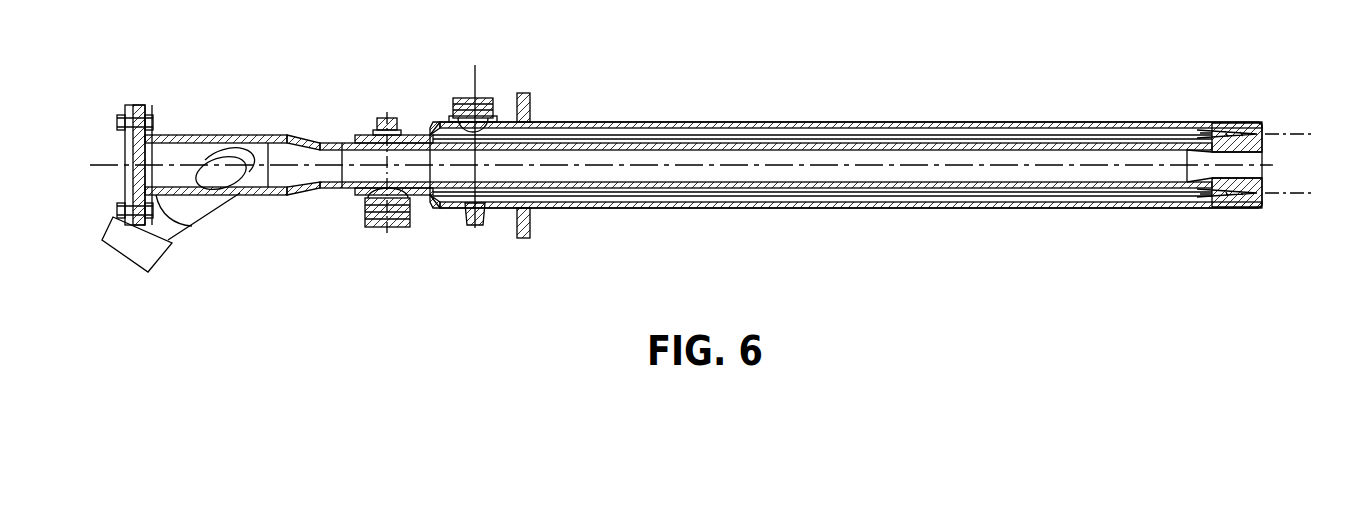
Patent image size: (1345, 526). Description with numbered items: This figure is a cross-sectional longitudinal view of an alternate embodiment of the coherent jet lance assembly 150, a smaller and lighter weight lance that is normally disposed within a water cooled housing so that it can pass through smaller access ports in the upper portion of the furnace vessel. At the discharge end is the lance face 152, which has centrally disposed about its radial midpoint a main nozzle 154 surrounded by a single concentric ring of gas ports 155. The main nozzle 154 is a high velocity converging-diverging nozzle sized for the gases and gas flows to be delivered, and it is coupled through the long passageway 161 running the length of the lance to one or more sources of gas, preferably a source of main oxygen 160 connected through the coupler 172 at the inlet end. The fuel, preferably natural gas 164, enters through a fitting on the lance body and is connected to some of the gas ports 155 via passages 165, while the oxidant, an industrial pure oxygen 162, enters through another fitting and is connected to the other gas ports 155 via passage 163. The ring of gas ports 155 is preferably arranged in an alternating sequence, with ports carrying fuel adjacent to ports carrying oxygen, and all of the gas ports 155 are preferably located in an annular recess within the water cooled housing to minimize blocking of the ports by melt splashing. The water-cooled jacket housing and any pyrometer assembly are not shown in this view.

The coherent jet lance assembly 150 is at (214, 78).
The lance face 152 is at (1287, 125).
The main nozzle 154 is at (1253, 157).
The gas ports 155 is at (1262, 196).
The main oxygen 160 is at (120, 270).
The passageway 161 is at (364, 158).
The industrial pure oxygen 162 is at (464, 78).
The passage 163 is at (750, 133).
The natural gas 164 is at (388, 256).
The passages 165 is at (880, 187).
The coupler 172 is at (150, 258).